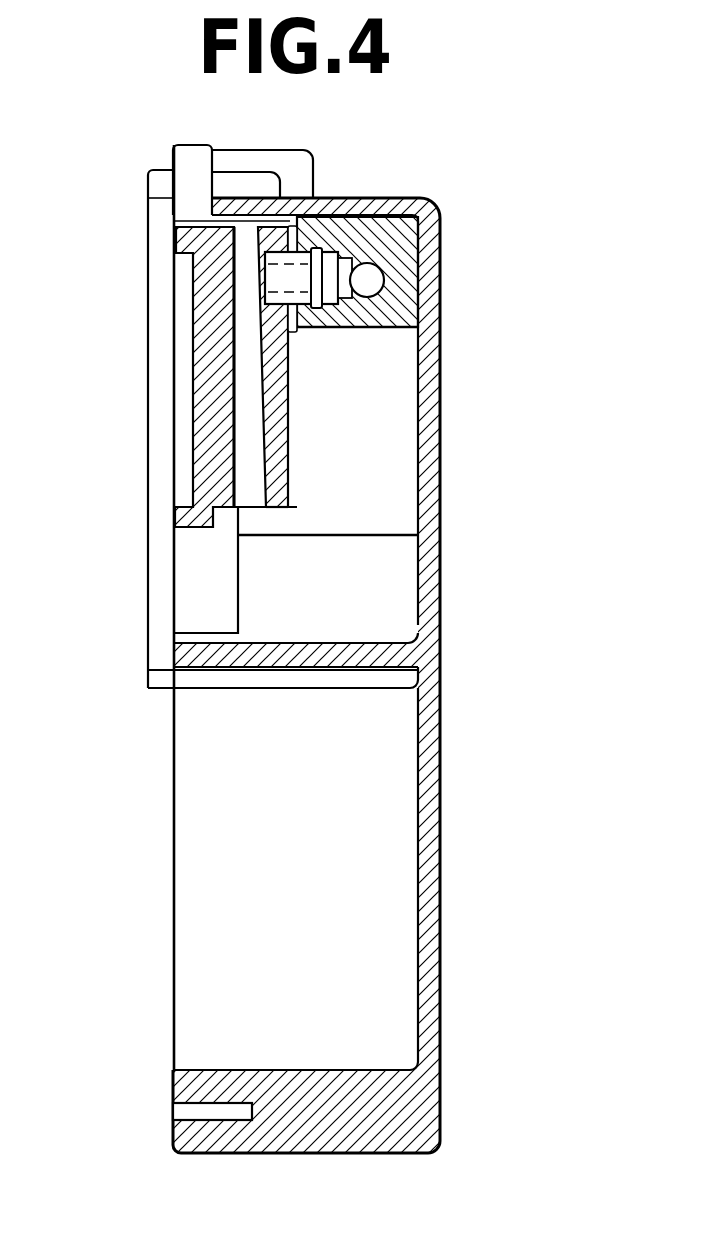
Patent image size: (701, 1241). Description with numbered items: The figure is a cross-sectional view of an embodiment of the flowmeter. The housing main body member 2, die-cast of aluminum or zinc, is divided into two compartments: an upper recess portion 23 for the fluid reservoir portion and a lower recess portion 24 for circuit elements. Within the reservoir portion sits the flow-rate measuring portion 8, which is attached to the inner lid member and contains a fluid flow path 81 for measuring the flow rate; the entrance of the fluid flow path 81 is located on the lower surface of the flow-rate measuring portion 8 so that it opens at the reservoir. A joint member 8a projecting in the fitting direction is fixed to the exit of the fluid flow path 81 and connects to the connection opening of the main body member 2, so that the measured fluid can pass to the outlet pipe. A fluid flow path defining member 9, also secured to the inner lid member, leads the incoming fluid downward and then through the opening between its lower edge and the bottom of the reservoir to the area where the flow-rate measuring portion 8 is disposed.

The main body member 2 is at (433, 997).
The flow-rate measuring portion 8 is at (282, 385).
The joint member 8a is at (313, 253).
The fluid flow path 81 is at (250, 485).
The fluid flow path defining member 9 is at (398, 426).
The recess portion for reservoir portion 23 is at (282, 587).
The recess portion for circuit elements 24 is at (230, 928).